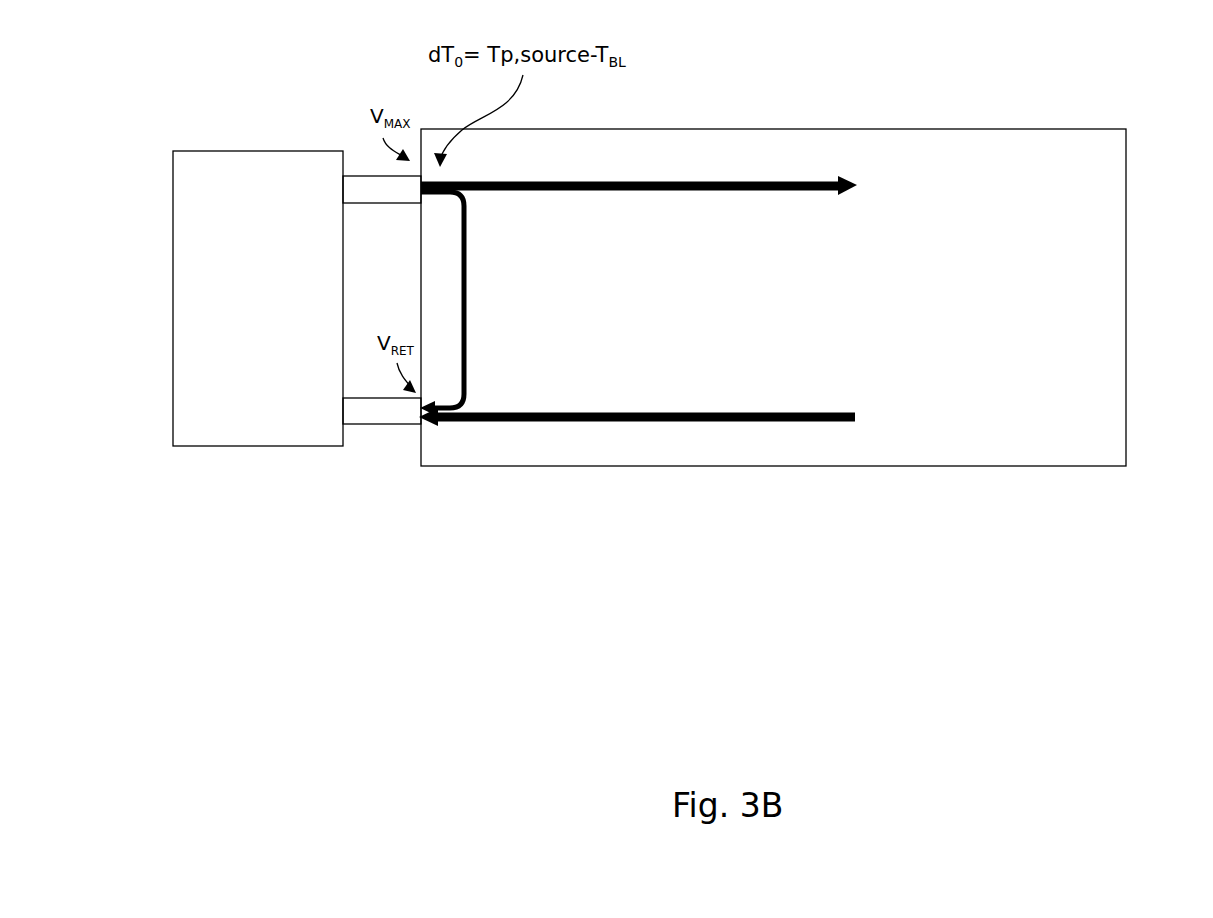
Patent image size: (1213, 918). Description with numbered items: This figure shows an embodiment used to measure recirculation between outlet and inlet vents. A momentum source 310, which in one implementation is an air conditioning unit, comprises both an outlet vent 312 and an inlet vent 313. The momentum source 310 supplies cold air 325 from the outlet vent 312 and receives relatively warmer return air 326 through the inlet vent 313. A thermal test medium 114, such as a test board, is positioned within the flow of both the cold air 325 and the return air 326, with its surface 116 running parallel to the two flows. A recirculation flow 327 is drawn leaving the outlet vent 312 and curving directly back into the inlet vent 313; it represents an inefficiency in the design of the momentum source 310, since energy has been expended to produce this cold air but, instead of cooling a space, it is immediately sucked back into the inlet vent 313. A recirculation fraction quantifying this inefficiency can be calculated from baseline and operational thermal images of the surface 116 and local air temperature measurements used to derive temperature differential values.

The momentum source 310 is at (248, 151).
The outlet vent 312 is at (378, 176).
The inlet vent 313 is at (388, 425).
The thermal test medium 114 is at (1127, 195).
The surface 116 is at (1073, 145).
The cold air 325 is at (592, 192).
The return air 326 is at (625, 412).
The recirculation flow 327 is at (467, 277).